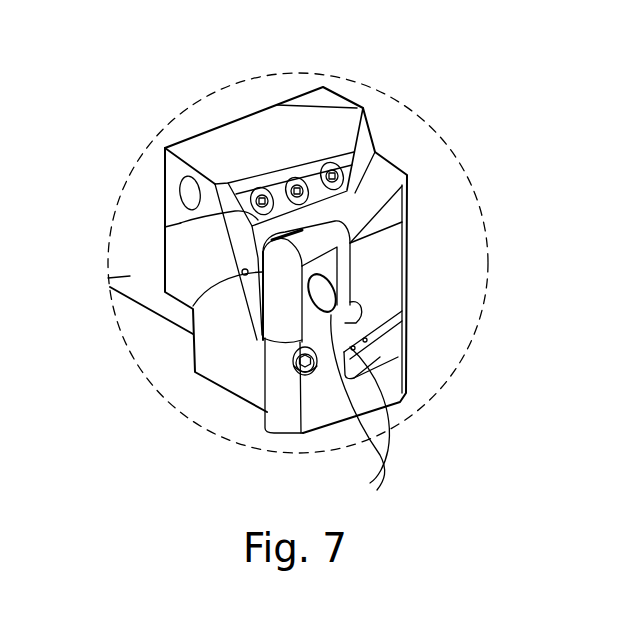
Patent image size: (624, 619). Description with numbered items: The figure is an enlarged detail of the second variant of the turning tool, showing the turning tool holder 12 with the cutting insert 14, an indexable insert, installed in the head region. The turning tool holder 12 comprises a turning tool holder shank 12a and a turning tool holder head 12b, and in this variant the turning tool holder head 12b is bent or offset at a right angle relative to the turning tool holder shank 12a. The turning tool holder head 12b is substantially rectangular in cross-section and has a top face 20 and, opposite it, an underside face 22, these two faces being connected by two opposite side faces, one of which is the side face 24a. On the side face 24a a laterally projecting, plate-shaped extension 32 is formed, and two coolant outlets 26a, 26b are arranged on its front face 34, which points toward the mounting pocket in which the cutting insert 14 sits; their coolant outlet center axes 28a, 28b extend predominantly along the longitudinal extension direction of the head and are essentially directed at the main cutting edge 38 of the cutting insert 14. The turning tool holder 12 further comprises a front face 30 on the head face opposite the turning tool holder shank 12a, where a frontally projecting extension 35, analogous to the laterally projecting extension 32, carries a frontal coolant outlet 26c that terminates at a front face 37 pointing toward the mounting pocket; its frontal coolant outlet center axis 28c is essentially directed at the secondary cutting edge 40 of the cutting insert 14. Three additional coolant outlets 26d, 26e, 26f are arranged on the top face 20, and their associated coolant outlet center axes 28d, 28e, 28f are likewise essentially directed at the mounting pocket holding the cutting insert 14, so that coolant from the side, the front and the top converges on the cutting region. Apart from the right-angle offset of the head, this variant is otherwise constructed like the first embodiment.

The turning tool holder 12 is at (110, 287).
The turning tool holder shank 12a is at (202, 115).
The turning tool holder head 12b is at (197, 150).
The cutting insert 14 is at (262, 370).
The top face 20 is at (338, 118).
The underside face 22 is at (257, 436).
The side face 24a is at (316, 418).
The coolant outlet 26a is at (390, 337).
The coolant outlet 26b is at (385, 392).
The frontal coolant outlet 26c is at (195, 312).
The coolant outlet 26d is at (262, 185).
The coolant outlet 26e is at (298, 176).
The coolant outlet 26f is at (332, 160).
The coolant outlet center axis 28a is at (352, 305).
The coolant outlet center axis 28b is at (318, 368).
The frontal coolant outlet center axis 28c is at (242, 275).
The coolant outlet center axis 28d is at (250, 206).
The coolant outlet center axis 28e is at (352, 206).
The coolant outlet center axis 28f is at (362, 162).
The front face 30 is at (258, 386).
The laterally projecting extension 32 is at (388, 326).
The front face 34 is at (366, 340).
The frontally projecting extension 35 is at (181, 250).
The front face 37 is at (181, 223).
The main cutting edge 38 is at (334, 262).
The secondary cutting edge 40 is at (280, 284).